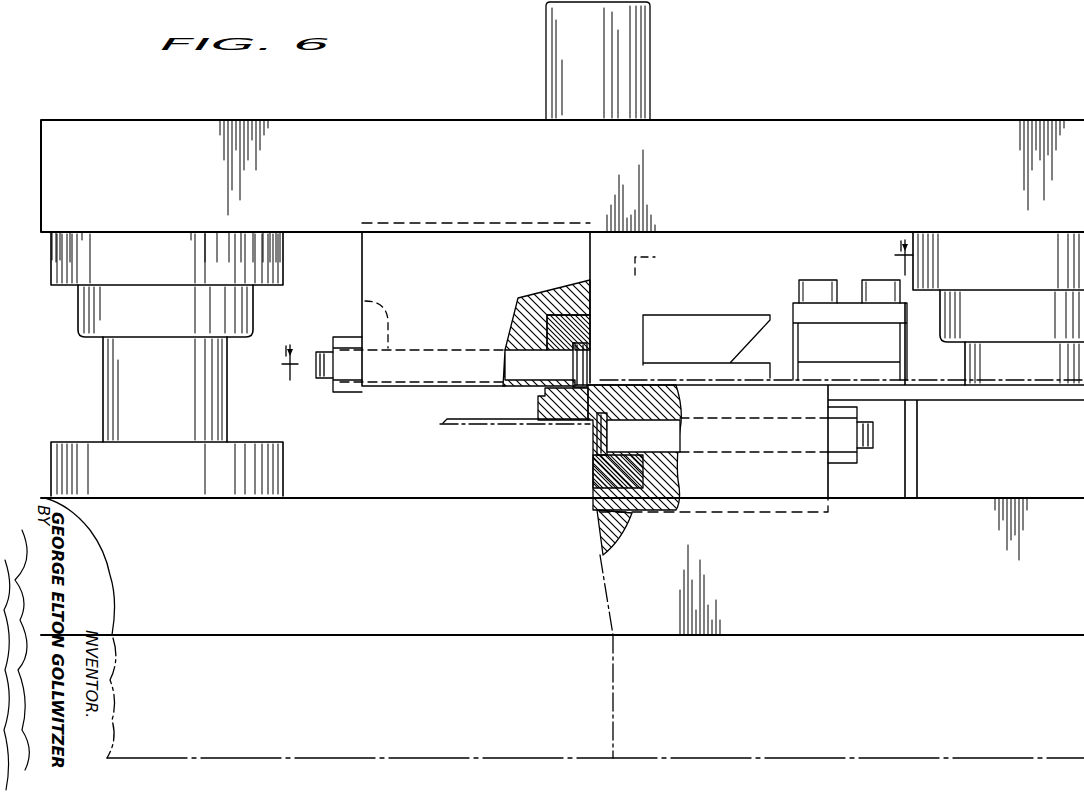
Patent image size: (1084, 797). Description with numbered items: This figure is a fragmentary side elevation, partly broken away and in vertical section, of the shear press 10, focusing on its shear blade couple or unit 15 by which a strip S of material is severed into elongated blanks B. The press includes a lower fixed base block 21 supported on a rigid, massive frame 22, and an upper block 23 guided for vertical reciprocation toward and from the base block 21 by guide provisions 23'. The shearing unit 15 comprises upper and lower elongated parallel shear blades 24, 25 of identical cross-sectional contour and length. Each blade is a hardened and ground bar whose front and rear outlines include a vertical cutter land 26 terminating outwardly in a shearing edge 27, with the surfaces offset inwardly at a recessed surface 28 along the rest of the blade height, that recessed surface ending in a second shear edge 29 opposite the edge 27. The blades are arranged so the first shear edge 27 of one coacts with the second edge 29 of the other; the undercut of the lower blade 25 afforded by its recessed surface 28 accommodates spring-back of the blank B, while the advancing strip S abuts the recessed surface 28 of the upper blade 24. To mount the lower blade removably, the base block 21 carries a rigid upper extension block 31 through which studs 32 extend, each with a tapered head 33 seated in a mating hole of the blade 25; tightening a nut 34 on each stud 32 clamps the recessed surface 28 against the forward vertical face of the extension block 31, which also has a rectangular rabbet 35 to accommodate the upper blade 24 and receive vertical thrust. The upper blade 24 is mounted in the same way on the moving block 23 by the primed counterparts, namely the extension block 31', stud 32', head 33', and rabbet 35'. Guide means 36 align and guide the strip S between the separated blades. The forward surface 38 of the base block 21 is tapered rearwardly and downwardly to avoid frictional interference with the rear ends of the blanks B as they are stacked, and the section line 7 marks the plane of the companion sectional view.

The shear press 10 is at (808, 168).
The upper block 23 is at (562, 132).
The guide provisions of upper block 23' is at (183, 364).
The section line of FIGURE 7 is at (587, 312).
The upper extension block 31' is at (456, 304).
The upper stud 32' is at (354, 317).
The nut 34 is at (345, 395).
The second shear edge 29 is at (540, 300).
The upper stud head 33' is at (587, 329).
The upper rabbet 35' is at (562, 283).
The upper shear blade 24 is at (590, 300).
The shear blade couple 15 is at (603, 301).
The first shearing edge 27 is at (590, 320).
The recessed surface 28 is at (546, 331).
The vertical cutter land 26 is at (592, 341).
The stud head 33 is at (614, 447).
The lower shear blade 25 is at (598, 521).
The rectangular rabbet 35 is at (653, 521).
The forward surface of base block 38 is at (612, 571).
The strip S is at (657, 377).
The blank B is at (446, 427).
The guide means 36 is at (797, 270).
The upper extension block 31 is at (829, 407).
The stud 32 is at (750, 463).
The lower fixed base block 21 is at (915, 588).
The frame 22 is at (215, 713).